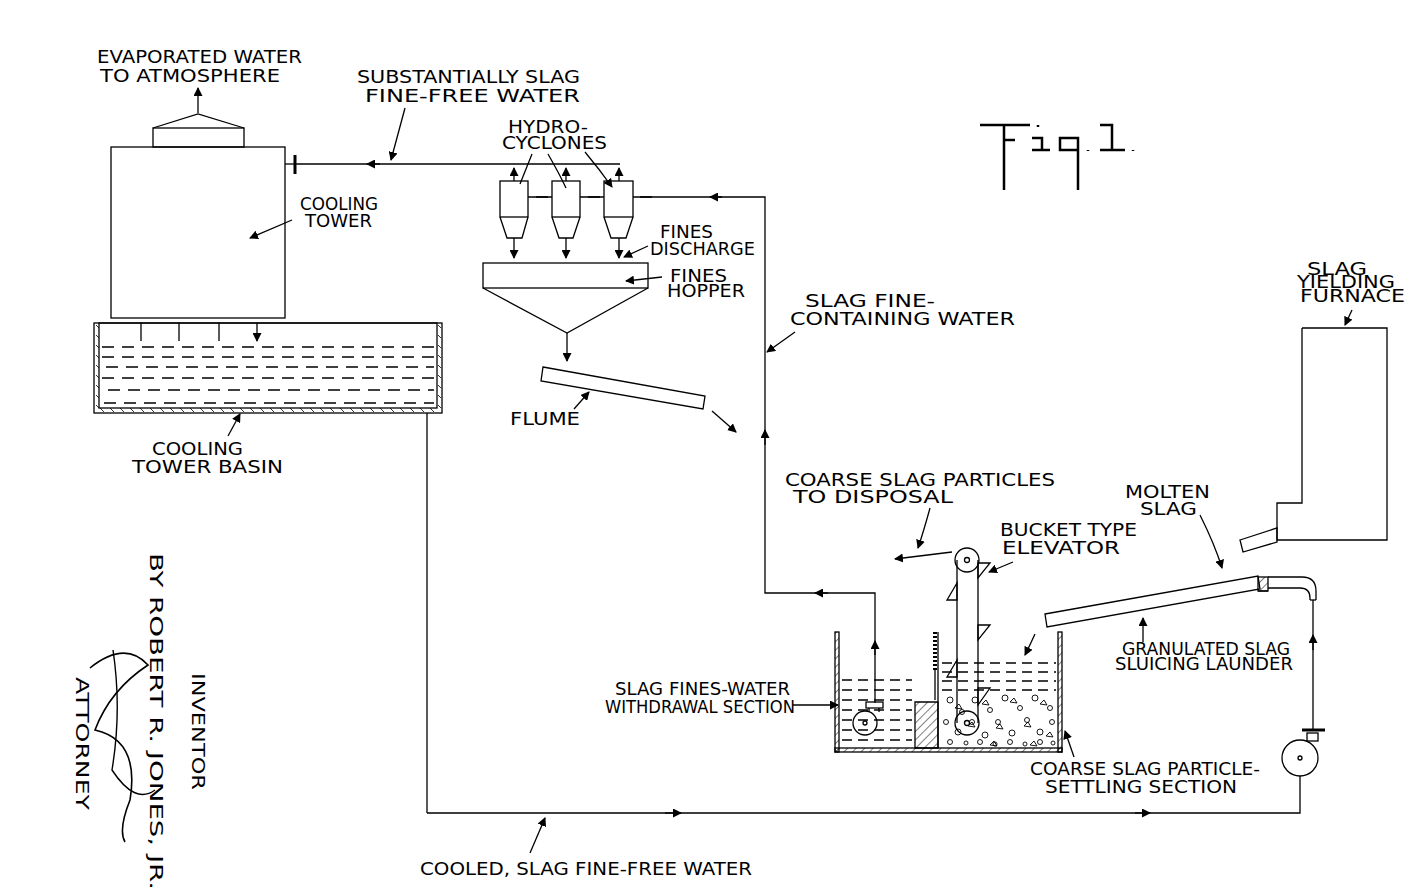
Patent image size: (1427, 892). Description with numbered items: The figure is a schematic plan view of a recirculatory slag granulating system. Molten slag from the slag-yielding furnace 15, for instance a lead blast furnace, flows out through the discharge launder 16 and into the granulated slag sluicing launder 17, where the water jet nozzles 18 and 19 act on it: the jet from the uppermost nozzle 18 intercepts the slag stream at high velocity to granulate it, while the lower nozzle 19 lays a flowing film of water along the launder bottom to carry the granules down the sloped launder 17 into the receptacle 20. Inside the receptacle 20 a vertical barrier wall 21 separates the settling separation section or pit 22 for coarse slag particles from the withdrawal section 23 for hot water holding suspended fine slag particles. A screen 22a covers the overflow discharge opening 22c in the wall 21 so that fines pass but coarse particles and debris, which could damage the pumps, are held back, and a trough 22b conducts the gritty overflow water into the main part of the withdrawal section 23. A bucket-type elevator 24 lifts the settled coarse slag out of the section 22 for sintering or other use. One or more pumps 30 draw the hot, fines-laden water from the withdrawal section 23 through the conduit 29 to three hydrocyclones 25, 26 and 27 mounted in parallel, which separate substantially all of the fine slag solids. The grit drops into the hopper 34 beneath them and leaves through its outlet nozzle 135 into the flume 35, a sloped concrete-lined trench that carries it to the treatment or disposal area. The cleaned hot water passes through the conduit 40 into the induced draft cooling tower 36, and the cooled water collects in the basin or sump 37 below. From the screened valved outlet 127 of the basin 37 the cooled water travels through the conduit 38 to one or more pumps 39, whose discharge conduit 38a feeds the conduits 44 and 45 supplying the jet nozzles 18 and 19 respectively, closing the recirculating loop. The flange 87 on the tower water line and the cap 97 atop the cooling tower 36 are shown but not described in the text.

The slag-yielding furnace 15 is at (1360, 423).
The discharge launder 16 is at (1250, 537).
The granulated slag sluicing launder 17 is at (1165, 598).
The water jet nozzle 18 is at (1263, 580).
The water jet nozzle 19 is at (1264, 593).
The receptacle 20 is at (998, 757).
The vertical barrier wall 21 is at (932, 676).
The settling separation section 22 is at (1043, 673).
The screen 22a is at (930, 656).
The trough 22b is at (915, 712).
The overflow discharge opening 22c is at (944, 642).
The withdrawal section 23 is at (846, 690).
The bucket-type elevator 24 is at (983, 634).
The hydrocyclone 25 is at (628, 182).
The hydrocyclone 26 is at (562, 215).
The hydrocyclone 27 is at (505, 201).
The conduit 29 is at (762, 527).
The pump 30 is at (852, 724).
The hopper 34 is at (590, 305).
The flume 35 is at (648, 393).
The cooling tower 36 is at (268, 291).
The basin 37 is at (436, 360).
The conduit 38 is at (778, 815).
The conduit 38a is at (1315, 672).
The pump 39 is at (1320, 760).
The conduit 40 is at (468, 150).
The conduit 44 is at (1303, 576).
The conduit 45 is at (1302, 591).
The flange connection 87 is at (297, 154).
The cooling tower cap 97 is at (208, 123).
The valved outlet 127 is at (430, 416).
The outlet nozzle 135 is at (569, 341).